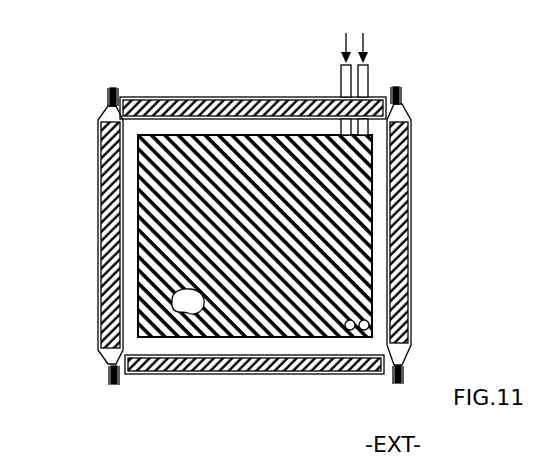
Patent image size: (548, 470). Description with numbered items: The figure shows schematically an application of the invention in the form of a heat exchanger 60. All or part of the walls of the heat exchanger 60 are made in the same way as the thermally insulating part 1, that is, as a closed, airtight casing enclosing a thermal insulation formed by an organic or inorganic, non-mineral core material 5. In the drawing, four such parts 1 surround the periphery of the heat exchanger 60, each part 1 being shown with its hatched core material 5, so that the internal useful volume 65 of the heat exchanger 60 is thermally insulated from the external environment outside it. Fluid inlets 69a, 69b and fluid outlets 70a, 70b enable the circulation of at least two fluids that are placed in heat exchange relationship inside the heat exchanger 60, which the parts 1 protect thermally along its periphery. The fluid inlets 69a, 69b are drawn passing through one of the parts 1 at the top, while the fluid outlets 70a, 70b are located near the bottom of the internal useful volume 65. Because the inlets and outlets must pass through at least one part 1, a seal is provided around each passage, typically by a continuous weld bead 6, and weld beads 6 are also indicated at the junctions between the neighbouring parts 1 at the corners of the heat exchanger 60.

The thermally insulating part 1 is at (90, 265).
The core material 5 is at (251, 106).
The continuous weld bead 6 is at (117, 92).
The heat exchanger 60 is at (205, 76).
The internal useful volume 65 is at (195, 303).
The fluid inlet 69a is at (339, 73).
The fluid inlet 69b is at (368, 58).
The fluid outlet 70a is at (350, 330).
The fluid outlet 70b is at (364, 330).